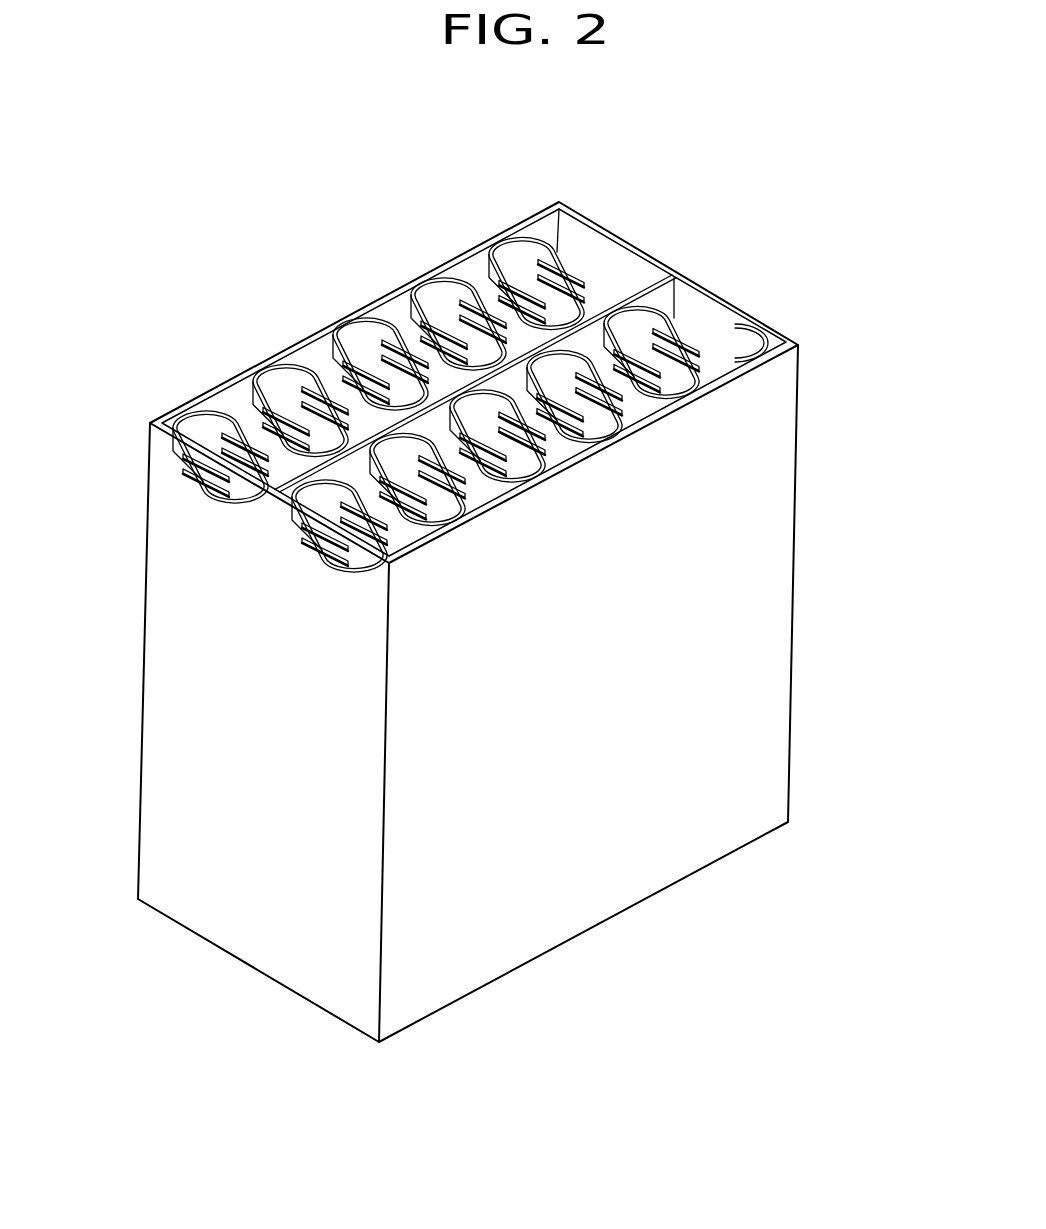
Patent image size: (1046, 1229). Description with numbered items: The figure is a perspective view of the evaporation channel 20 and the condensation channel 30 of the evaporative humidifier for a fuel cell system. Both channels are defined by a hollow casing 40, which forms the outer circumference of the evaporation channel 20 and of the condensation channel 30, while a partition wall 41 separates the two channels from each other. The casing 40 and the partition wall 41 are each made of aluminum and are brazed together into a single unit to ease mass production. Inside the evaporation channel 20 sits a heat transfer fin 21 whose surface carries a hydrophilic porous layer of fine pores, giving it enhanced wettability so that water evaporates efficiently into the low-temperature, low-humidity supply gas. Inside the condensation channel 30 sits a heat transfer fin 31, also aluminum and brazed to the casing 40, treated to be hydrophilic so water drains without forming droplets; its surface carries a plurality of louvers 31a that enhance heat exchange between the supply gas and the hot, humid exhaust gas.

The evaporation channel 20 is at (538, 216).
The heat transfer fin 21 is at (395, 332).
The condensation channel 30 is at (727, 303).
The heat transfer fin 31 is at (637, 410).
The louvers 31a is at (735, 325).
The casing 40 is at (177, 690).
The partition wall 41 is at (658, 305).